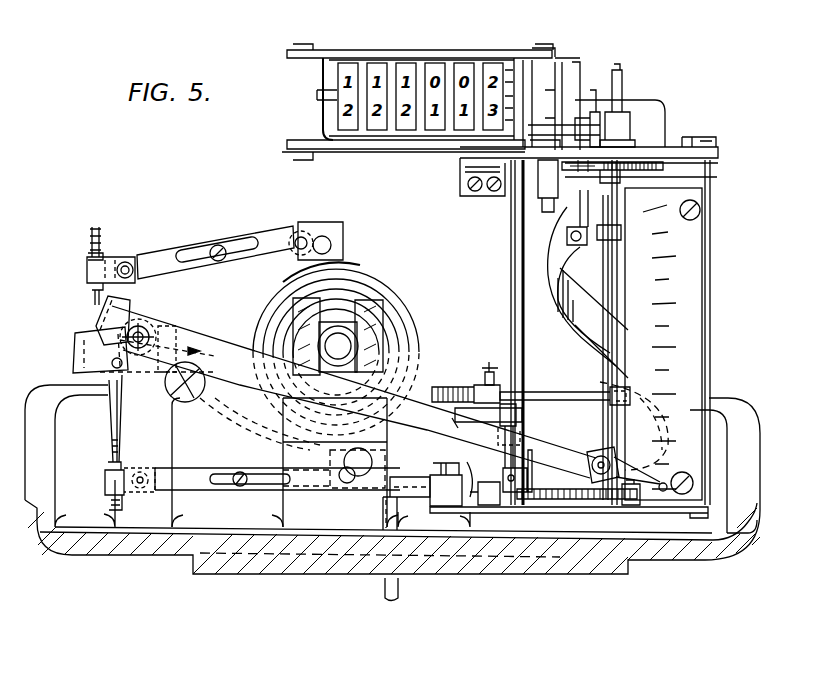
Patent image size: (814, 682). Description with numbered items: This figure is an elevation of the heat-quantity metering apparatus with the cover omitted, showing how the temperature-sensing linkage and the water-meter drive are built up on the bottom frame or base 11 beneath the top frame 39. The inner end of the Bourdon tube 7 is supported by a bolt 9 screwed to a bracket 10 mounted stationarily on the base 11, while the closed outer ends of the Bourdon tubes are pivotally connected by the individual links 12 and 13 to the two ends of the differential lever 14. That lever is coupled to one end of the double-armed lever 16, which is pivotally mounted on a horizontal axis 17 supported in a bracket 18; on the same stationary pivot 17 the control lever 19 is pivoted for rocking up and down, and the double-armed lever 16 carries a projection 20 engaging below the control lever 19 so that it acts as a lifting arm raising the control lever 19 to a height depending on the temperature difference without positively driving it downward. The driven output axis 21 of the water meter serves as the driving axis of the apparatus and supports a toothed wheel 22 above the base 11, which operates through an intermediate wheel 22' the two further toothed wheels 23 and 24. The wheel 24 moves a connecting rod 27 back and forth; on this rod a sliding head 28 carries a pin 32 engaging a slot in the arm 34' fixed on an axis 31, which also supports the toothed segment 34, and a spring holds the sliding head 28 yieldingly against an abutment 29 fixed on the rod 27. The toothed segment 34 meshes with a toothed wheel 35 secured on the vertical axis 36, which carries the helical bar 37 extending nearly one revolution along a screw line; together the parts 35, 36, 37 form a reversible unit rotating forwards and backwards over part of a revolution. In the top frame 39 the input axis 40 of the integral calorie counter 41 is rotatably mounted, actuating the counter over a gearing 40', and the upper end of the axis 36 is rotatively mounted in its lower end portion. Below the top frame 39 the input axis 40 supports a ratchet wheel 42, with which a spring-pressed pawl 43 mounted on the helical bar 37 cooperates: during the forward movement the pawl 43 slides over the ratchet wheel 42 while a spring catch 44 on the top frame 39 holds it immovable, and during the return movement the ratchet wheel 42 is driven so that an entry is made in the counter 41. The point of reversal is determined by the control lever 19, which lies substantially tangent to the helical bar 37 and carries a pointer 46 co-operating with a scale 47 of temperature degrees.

The Bourdon tube 7 is at (260, 327).
The bolt 9 is at (342, 345).
The bracket 10 is at (367, 300).
The bottom frame or base 11 is at (209, 566).
The link 12 is at (207, 242).
The link 13 is at (218, 490).
The differential lever 14 is at (110, 411).
The double-armed lever 16 is at (88, 352).
The horizontal axis 17 is at (141, 329).
The bracket 18 is at (158, 455).
The control lever 19 is at (227, 378).
The projection 20 is at (170, 396).
The driven output axis of the water meter 21 is at (384, 590).
The toothed wheel 22 is at (422, 541).
The intermediate wheel 22' is at (459, 467).
The toothed wheel 23 is at (541, 506).
The toothed wheel 24 is at (624, 506).
The connecting rod 27 is at (546, 392).
The sliding head 28 is at (468, 387).
The abutment 29 is at (455, 402).
The axis 31 is at (509, 215).
The pin 32 is at (487, 370).
The toothed segment 34 is at (532, 475).
The arm 34' is at (529, 433).
The toothed wheel 35 is at (593, 506).
The vertical axis 36 is at (566, 208).
The helical bar 37 is at (580, 318).
The top frame 39 is at (376, 151).
The input axis 40 is at (622, 104).
The gearing 40' is at (561, 99).
The integral counter for quantity of heat 41 is at (414, 102).
The ratchet wheel 42 is at (666, 165).
The spring-pressed pawl 43 is at (640, 183).
The spring catch 44 is at (549, 168).
The pointer 46 is at (634, 478).
The scale 47 is at (675, 302).